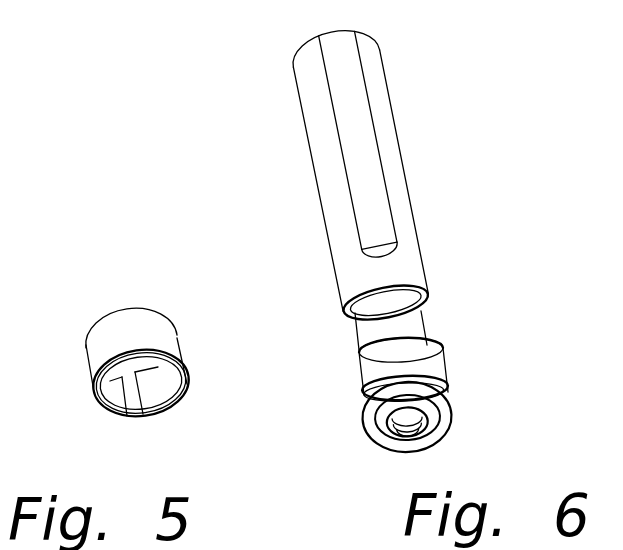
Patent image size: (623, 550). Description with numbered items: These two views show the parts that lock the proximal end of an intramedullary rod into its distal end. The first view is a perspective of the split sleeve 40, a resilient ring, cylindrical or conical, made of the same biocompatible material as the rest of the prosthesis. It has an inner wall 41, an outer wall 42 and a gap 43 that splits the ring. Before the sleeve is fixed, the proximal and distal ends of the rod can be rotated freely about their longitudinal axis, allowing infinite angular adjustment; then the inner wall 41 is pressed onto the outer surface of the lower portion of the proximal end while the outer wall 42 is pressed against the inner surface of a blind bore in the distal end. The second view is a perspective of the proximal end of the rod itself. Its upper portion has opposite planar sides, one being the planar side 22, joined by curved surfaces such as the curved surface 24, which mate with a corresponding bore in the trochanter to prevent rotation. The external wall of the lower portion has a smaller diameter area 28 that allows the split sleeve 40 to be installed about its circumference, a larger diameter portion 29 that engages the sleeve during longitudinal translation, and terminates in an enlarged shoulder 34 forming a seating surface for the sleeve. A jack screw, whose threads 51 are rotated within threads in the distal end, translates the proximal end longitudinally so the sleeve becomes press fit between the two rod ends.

In FIG. 6, the planar side 22 is at (347, 68).
In FIG. 6, the curved surface 24 is at (318, 107).
In FIG. 6, the smaller diameter area 28 is at (430, 330).
In FIG. 6, the larger diameter portion 29 is at (414, 368).
In FIG. 6, the enlarged shoulder 34 is at (377, 395).
In FIG. 5, the split sleeve 40 is at (125, 290).
In FIG. 5, the inner wall 41 is at (112, 390).
In FIG. 5, the outer wall 42 is at (148, 332).
In FIG. 5, the gap 43 is at (133, 405).
In FIG. 5, the threads 51 is at (16, 318).